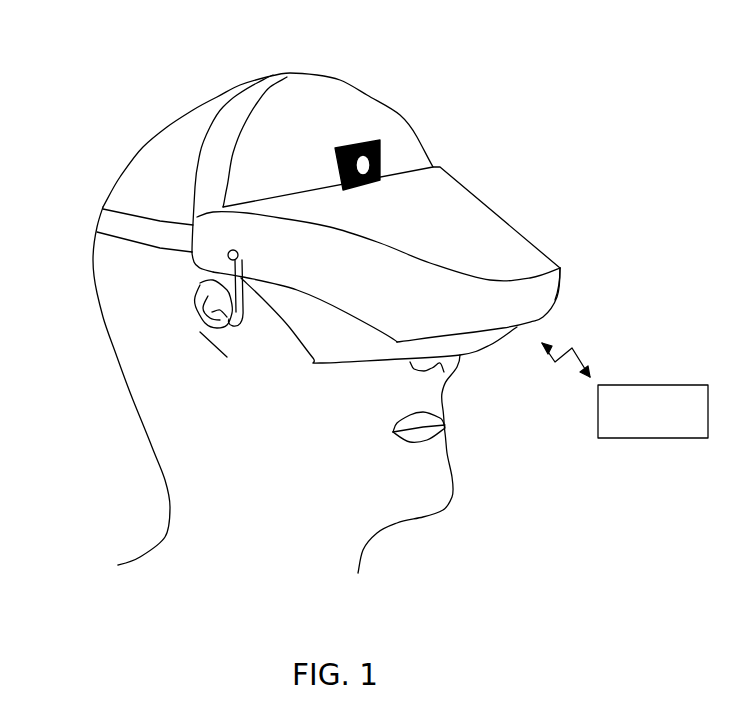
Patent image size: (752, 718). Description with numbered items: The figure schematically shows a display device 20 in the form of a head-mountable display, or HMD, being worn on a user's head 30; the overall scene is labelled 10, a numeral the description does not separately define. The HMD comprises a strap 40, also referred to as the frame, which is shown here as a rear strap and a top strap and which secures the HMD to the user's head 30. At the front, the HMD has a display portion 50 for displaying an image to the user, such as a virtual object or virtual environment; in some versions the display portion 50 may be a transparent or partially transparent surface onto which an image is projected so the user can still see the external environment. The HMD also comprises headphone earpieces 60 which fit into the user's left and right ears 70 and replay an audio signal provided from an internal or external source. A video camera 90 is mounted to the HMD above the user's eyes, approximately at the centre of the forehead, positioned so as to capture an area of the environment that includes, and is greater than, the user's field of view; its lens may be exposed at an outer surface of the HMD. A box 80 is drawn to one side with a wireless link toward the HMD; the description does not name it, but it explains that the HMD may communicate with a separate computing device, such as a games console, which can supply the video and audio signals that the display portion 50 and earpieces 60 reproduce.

The user wearing head mounted display system 10 is at (103, 398).
The display device 20 is at (515, 203).
The user's head 30 is at (108, 312).
The strap 40 is at (100, 212).
The display portion 50 is at (545, 248).
The headphone earpieces 60 is at (240, 325).
The ears 70 is at (195, 307).
The external device 80 is at (662, 383).
The video camera 90 is at (382, 140).